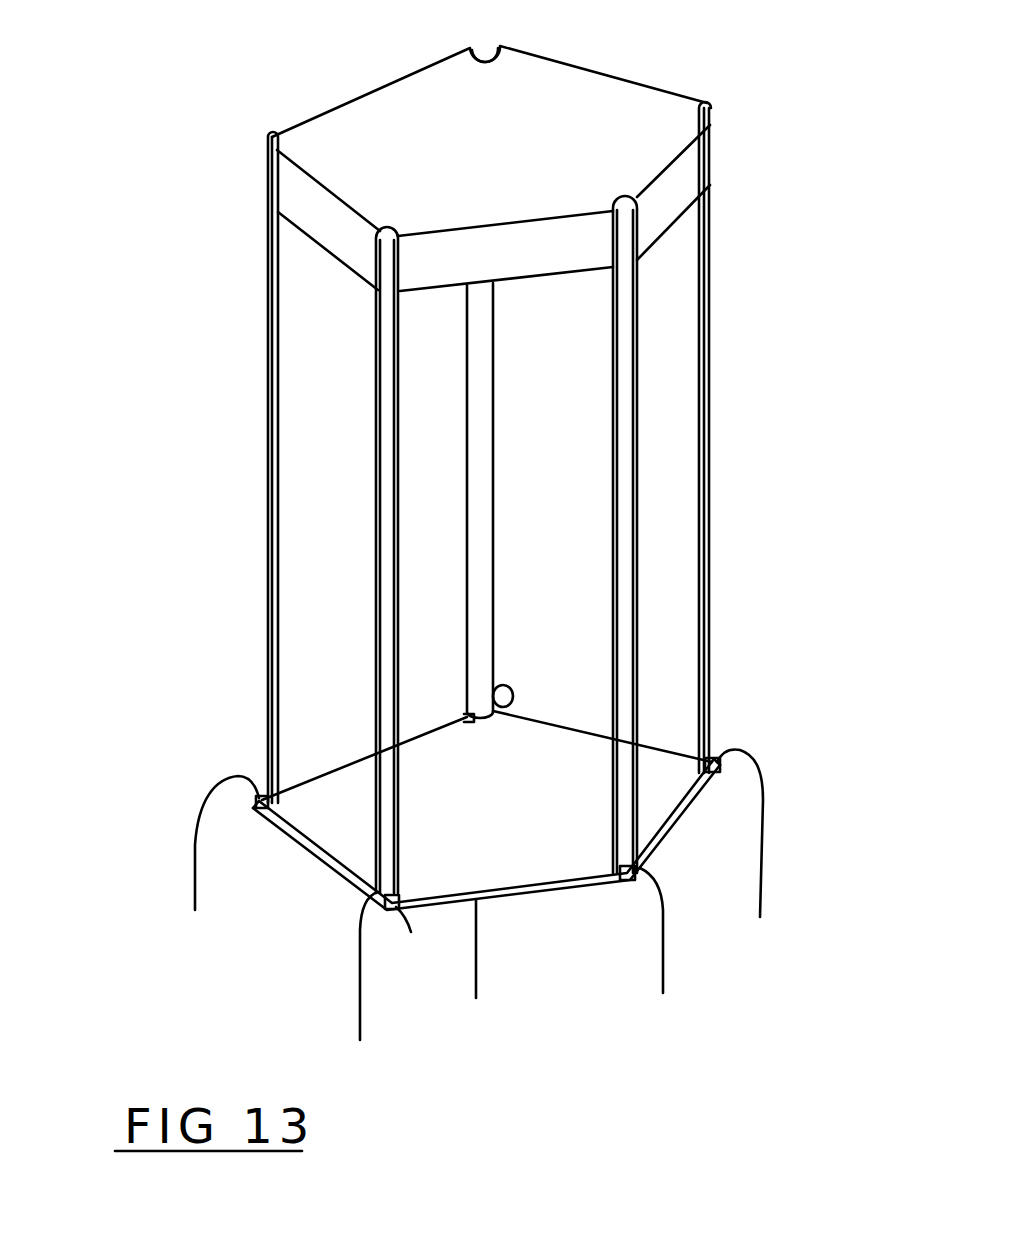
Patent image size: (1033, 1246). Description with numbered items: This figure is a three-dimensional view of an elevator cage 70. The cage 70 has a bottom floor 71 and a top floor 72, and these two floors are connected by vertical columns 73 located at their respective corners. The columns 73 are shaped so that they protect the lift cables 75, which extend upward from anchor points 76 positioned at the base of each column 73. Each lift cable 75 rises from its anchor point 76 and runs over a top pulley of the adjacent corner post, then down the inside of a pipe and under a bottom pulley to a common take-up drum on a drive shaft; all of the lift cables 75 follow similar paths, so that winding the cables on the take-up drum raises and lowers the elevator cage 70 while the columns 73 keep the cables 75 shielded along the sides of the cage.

The elevator cage 70 is at (395, 80).
The bottom floor 71 is at (482, 835).
The top floor 72 is at (470, 122).
The vertical columns 73 is at (493, 340).
The lift cables 75 is at (513, 686).
The anchor points 76 is at (464, 720).